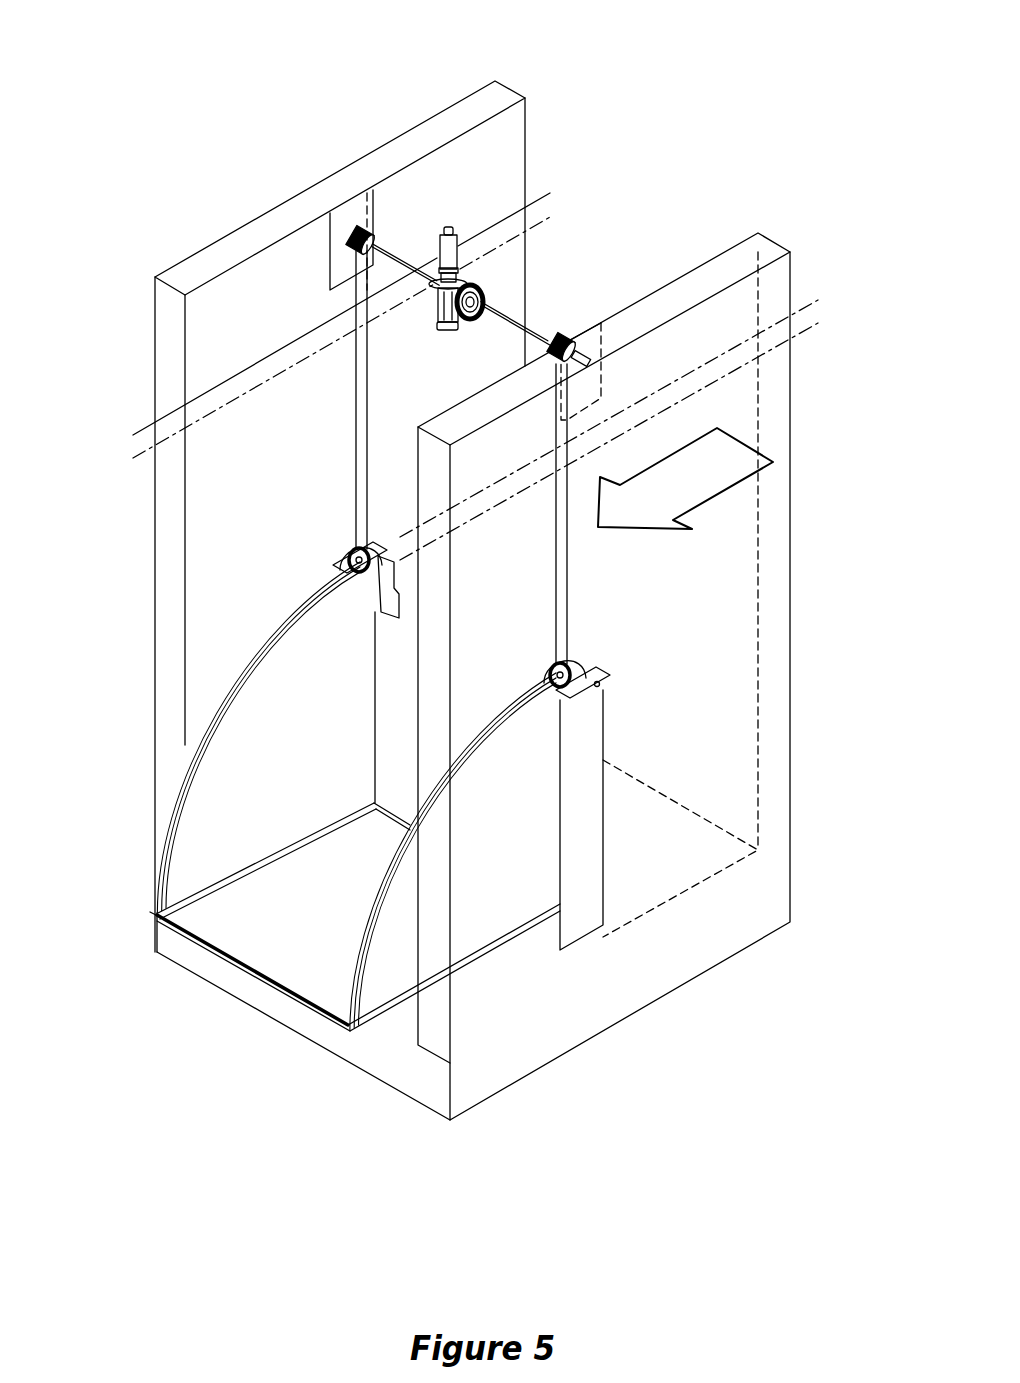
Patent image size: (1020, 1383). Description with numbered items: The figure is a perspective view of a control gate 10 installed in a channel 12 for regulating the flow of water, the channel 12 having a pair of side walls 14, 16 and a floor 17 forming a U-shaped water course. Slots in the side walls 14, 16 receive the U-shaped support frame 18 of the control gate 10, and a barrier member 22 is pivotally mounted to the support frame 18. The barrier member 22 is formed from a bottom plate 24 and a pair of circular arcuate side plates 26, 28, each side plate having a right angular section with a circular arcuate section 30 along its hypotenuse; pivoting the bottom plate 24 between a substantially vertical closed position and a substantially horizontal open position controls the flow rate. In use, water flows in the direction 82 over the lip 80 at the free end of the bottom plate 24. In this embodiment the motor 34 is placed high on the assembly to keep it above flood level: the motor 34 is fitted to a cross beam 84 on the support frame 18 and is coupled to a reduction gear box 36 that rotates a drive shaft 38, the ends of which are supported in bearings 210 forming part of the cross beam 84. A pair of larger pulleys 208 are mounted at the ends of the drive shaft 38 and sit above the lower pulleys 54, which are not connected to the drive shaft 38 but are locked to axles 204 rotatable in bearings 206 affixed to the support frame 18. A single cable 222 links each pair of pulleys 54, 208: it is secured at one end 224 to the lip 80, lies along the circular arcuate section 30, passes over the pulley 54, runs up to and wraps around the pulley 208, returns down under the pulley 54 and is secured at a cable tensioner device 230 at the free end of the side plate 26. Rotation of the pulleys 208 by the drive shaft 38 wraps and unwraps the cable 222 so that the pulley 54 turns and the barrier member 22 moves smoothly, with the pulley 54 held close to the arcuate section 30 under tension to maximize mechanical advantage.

The control gate 10 is at (178, 43).
The channel 12 is at (560, 140).
The side wall 14 is at (502, 95).
The side wall 16 is at (763, 242).
The floor 17 is at (703, 861).
The support frame 18 is at (598, 907).
The barrier member 22 is at (212, 921).
The bottom plate 24 is at (353, 921).
The side plate 26 is at (300, 763).
The side plate 28 is at (508, 878).
The circular arcuate section 30 is at (155, 860).
The motor 34 is at (448, 226).
The reduction gear box 36 is at (497, 312).
The drive shaft 38 is at (530, 305).
The pulley 54 is at (346, 556).
The lip 80 is at (252, 985).
The direction of flow 82 is at (650, 514).
The cross beam 84 is at (562, 312).
The axle 204 is at (338, 568).
The bearing 206 is at (347, 543).
The pulley 208 is at (352, 245).
The bearing 210 is at (340, 275).
The cable 222 is at (355, 290).
The end of cable 224 is at (148, 912).
The cable tensioner device 230 is at (398, 582).